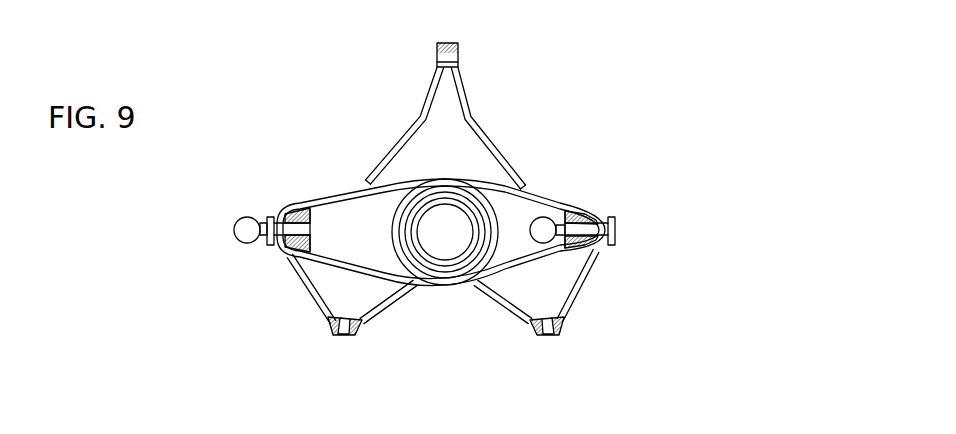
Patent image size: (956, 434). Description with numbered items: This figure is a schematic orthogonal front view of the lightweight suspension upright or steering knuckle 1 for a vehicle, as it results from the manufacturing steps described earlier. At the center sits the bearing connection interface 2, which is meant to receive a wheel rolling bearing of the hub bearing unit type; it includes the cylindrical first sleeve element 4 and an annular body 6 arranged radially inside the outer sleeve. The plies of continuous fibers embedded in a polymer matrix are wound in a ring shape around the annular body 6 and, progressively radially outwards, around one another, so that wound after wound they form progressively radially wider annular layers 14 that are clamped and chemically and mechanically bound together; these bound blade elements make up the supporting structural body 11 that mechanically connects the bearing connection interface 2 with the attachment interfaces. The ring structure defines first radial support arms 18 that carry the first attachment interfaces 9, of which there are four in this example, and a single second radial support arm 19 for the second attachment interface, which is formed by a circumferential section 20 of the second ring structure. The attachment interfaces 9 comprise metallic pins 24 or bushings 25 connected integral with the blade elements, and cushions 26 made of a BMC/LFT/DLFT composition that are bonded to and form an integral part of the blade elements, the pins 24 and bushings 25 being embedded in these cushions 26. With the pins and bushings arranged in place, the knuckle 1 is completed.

The suspension upright or knuckle 1 is at (243, 113).
The bearing connection interface 2 is at (456, 237).
The first sleeve element 4 is at (415, 292).
The annular body 6 is at (470, 188).
The first attachment interface 9 is at (240, 254).
The supporting structural body 11 is at (369, 162).
The annular layers 14 is at (588, 207).
The first radial support arms 18 is at (310, 303).
The second radial support arm 19 is at (470, 102).
The circumferential section 20 is at (416, 114).
The metallic pins 24 is at (240, 226).
The bushings 25 is at (458, 48).
The cushions 26 is at (437, 48).